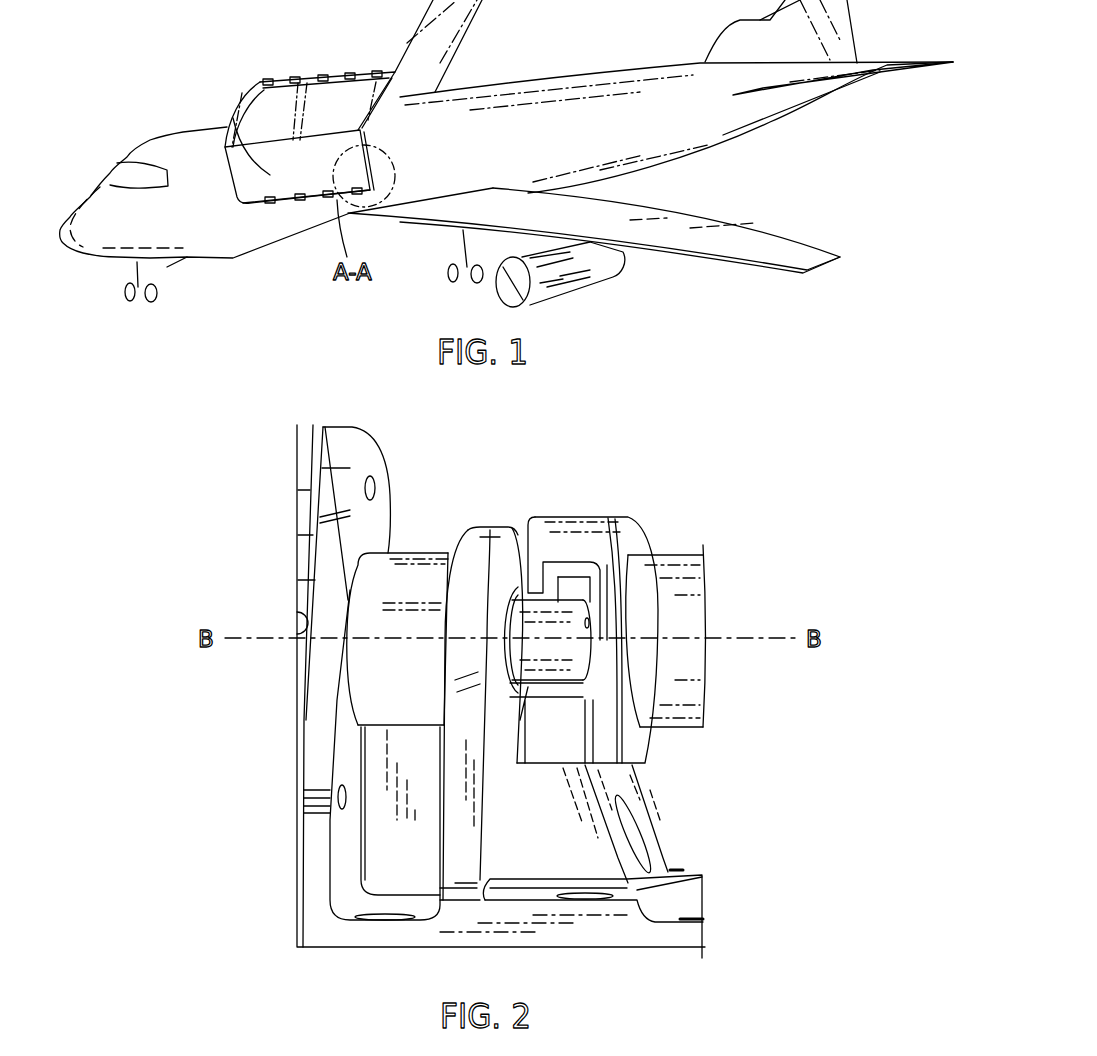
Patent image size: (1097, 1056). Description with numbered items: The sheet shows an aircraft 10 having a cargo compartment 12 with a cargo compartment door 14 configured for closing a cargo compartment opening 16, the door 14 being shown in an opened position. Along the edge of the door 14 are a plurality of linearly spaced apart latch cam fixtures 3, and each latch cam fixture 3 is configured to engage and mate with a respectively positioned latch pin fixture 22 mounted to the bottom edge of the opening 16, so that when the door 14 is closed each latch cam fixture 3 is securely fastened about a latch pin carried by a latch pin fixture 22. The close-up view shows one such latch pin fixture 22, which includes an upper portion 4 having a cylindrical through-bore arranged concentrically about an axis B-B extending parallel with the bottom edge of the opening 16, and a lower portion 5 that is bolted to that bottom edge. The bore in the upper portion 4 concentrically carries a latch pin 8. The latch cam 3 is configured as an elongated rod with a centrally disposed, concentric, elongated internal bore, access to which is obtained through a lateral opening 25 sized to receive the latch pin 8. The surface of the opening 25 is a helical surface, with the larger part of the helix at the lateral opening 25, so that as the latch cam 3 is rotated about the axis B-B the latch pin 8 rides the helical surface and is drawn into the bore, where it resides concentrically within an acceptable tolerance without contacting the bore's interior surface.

In FIG. 1, the aircraft 10 is at (556, 97).
In FIG. 1, the cargo compartment 12 is at (233, 117).
In FIG. 1, the cargo compartment door 14 is at (282, 80).
In FIG. 1, the cargo compartment opening 16 is at (252, 207).
In FIG. 1, the latch cam fixture 3 is at (353, 77).
In FIG. 2, the latch cam fixture 3 is at (577, 527).
In FIG. 1, the latch pin fixture 22 is at (330, 200).
In FIG. 2, the latch pin fixture 22 is at (389, 932).
In FIG. 2, the upper portion 4 is at (482, 540).
In FIG. 2, the latch pin 8 is at (527, 560).
In FIG. 2, the lateral opening 25 is at (602, 550).
In FIG. 2, the lower portion 5 is at (607, 928).